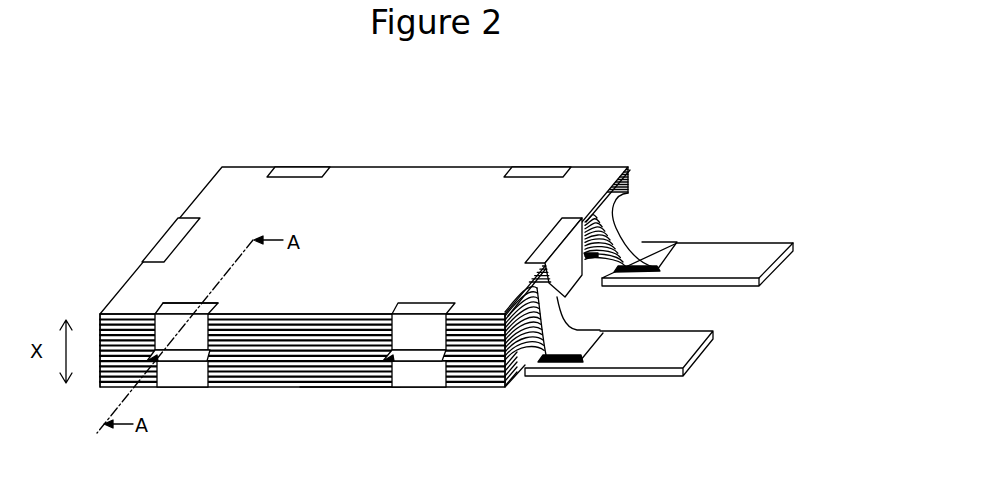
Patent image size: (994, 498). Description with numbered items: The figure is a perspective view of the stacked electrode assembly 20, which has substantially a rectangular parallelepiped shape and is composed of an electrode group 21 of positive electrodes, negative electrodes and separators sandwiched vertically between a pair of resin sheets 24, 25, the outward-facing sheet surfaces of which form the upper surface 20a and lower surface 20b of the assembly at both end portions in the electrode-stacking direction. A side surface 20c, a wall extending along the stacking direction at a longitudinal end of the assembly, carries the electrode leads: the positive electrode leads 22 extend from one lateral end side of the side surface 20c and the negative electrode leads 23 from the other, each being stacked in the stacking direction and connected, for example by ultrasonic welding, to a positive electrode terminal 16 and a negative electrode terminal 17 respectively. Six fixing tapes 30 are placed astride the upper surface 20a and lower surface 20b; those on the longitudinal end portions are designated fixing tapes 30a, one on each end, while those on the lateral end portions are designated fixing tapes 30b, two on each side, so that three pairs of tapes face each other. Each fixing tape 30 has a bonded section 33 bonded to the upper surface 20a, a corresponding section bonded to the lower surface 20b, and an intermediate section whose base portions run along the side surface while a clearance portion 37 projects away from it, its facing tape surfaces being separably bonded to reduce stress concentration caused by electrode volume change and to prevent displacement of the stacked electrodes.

The stacked electrode assembly 20 is at (392, 276).
The upper surface 20a is at (418, 185).
The lower surface 20b is at (295, 388).
The side surface 20c is at (100, 365).
The electrode group 21 is at (350, 388).
The positive electrode lead 22 is at (623, 223).
The negative electrode lead 23 is at (562, 347).
The resin sheet 24 is at (584, 180).
The resin sheet 25 is at (490, 392).
The positive electrode terminal 16 is at (762, 264).
The negative electrode terminal 17 is at (686, 353).
The fixing tape 30 is at (390, 277).
The fixing tape 30a is at (175, 232).
The fixing tape 30b is at (355, 277).
The bonded section 33 is at (173, 302).
The clearance portion 37 is at (192, 362).